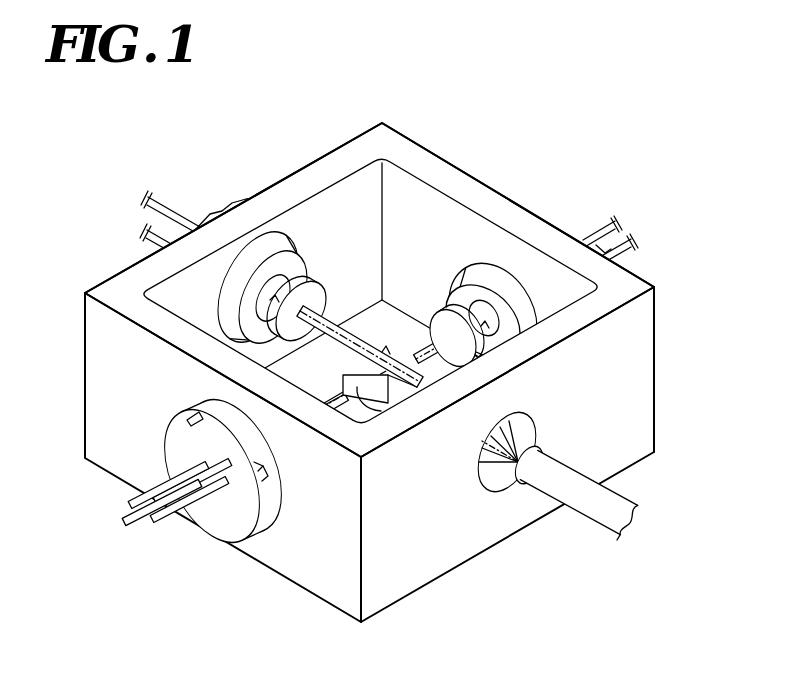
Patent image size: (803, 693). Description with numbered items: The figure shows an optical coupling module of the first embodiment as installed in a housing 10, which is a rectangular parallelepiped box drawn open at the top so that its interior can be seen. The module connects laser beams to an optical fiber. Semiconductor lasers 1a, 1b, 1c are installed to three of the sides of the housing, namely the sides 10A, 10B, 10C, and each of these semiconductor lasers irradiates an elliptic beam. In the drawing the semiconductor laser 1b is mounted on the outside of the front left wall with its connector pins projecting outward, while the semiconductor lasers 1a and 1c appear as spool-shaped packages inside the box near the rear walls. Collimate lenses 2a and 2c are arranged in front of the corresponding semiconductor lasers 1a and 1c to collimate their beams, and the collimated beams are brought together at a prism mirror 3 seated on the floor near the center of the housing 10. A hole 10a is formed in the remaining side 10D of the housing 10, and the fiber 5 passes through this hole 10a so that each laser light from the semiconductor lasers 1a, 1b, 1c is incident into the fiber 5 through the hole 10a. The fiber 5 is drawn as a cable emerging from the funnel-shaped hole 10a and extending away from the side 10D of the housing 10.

The housing 10 is at (459, 548).
The side 10A is at (103, 283).
The side 10B is at (97, 458).
The side 10C is at (655, 403).
The side 10D is at (654, 455).
The hole 10a is at (503, 493).
The semiconductor laser 1a is at (283, 240).
The semiconductor laser 1b is at (221, 535).
The semiconductor laser 1c is at (503, 290).
The collimate lens 2a is at (318, 305).
The collimate lens 2c is at (440, 310).
The prism mirror 3 is at (378, 413).
The fiber 5 is at (596, 517).